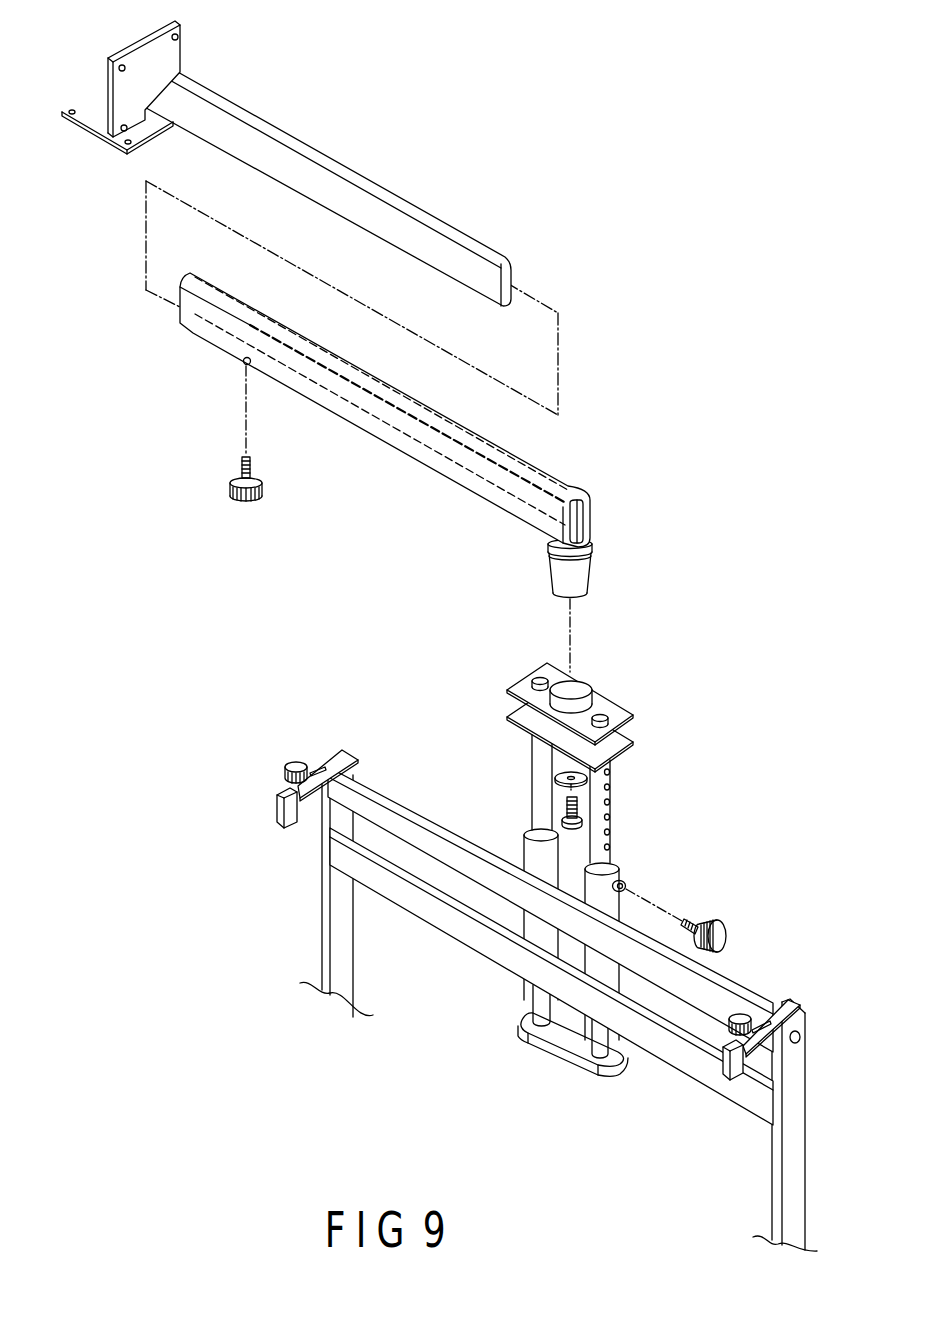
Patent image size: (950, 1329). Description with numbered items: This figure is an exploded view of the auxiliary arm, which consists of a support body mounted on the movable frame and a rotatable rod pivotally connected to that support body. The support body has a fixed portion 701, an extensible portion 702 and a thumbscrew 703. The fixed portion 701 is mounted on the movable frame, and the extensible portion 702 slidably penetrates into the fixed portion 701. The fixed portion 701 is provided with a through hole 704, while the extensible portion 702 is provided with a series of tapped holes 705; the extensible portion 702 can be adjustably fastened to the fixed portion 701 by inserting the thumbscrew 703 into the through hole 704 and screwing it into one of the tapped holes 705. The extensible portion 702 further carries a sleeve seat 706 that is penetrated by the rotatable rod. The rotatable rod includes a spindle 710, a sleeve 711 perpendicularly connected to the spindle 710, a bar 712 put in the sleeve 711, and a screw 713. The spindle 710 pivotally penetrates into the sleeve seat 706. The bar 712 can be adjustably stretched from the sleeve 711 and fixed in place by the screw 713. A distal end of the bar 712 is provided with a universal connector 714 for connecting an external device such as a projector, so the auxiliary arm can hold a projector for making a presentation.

The fixed portion 701 is at (540, 1006).
The extensible portion 702 is at (540, 755).
The thumbscrew 703 is at (725, 939).
The through hole 704 is at (624, 879).
The tapped holes 705 is at (610, 795).
The sleeve seat 706 is at (590, 703).
The spindle 710 is at (548, 573).
The sleeve 711 is at (372, 430).
The bar 712 is at (338, 181).
The screw 713 is at (233, 482).
The universal connector 714 is at (110, 100).